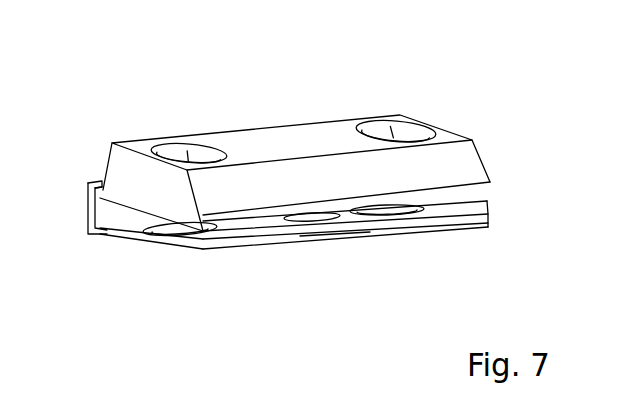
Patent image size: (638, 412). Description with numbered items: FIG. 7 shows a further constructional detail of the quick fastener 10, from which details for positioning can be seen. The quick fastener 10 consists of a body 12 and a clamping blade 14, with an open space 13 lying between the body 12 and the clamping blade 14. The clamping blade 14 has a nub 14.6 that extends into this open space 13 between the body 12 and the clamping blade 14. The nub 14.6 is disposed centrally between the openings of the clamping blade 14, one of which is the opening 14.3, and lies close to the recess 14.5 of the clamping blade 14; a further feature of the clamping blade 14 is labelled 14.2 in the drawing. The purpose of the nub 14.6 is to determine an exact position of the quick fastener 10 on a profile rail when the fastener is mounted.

The quick fastener 10 is at (463, 91).
The body 12 is at (288, 142).
The open space 13 is at (119, 217).
The clamping blade 14 is at (88, 208).
The plate opening 14.2 is at (397, 217).
The opening 14.3 is at (203, 233).
The recess 14.5 is at (335, 238).
The nub 14.6 is at (287, 220).